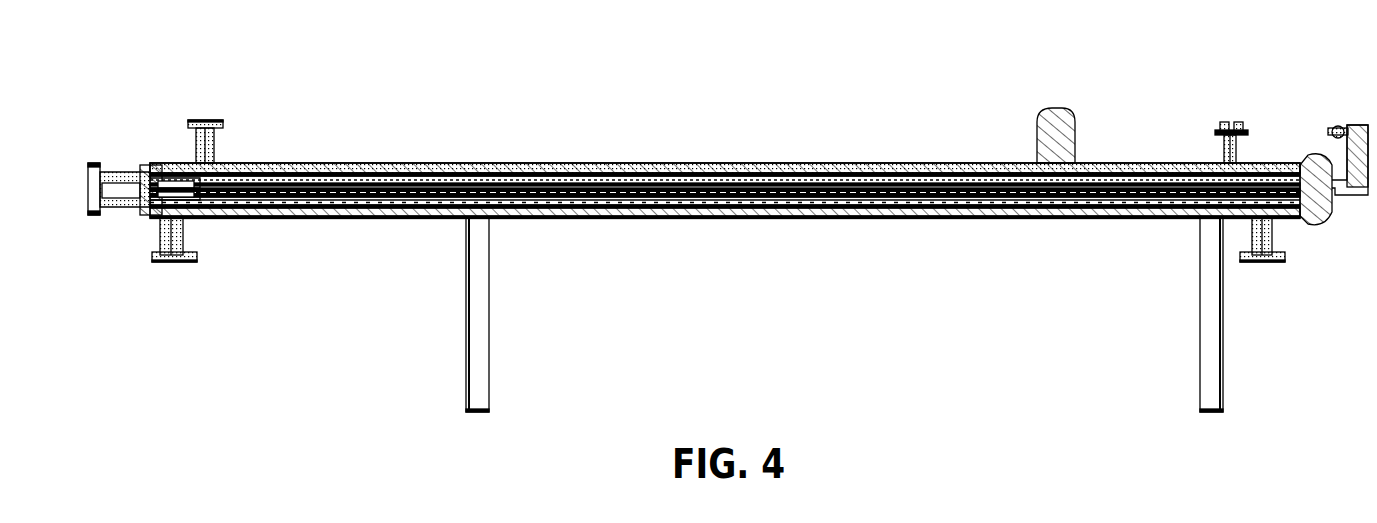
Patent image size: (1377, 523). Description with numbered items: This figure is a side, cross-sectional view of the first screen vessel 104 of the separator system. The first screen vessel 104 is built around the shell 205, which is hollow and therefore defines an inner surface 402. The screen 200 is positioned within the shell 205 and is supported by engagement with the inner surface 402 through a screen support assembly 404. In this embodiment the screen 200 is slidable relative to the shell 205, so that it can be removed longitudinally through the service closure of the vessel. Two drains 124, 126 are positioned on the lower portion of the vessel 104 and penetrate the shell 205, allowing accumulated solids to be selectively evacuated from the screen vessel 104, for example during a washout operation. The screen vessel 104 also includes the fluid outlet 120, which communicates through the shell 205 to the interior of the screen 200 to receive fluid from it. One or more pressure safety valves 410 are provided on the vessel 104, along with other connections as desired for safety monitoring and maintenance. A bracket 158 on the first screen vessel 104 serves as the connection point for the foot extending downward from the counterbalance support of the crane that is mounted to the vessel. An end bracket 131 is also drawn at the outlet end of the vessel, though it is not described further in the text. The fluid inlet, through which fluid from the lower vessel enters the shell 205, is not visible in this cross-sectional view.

The first screen vessel 104 is at (385, 46).
The fluid outlet 120 is at (112, 172).
The drain 124 is at (162, 226).
The drain 126 is at (1276, 237).
The outlet end bracket 131 is at (1318, 156).
The bracket 158 is at (1070, 118).
The screen 200 is at (586, 185).
The shell 205 is at (796, 163).
The inner surface 402 is at (425, 163).
The screen support assembly 404 is at (618, 212).
The pressure safety valve 410 is at (1232, 125).